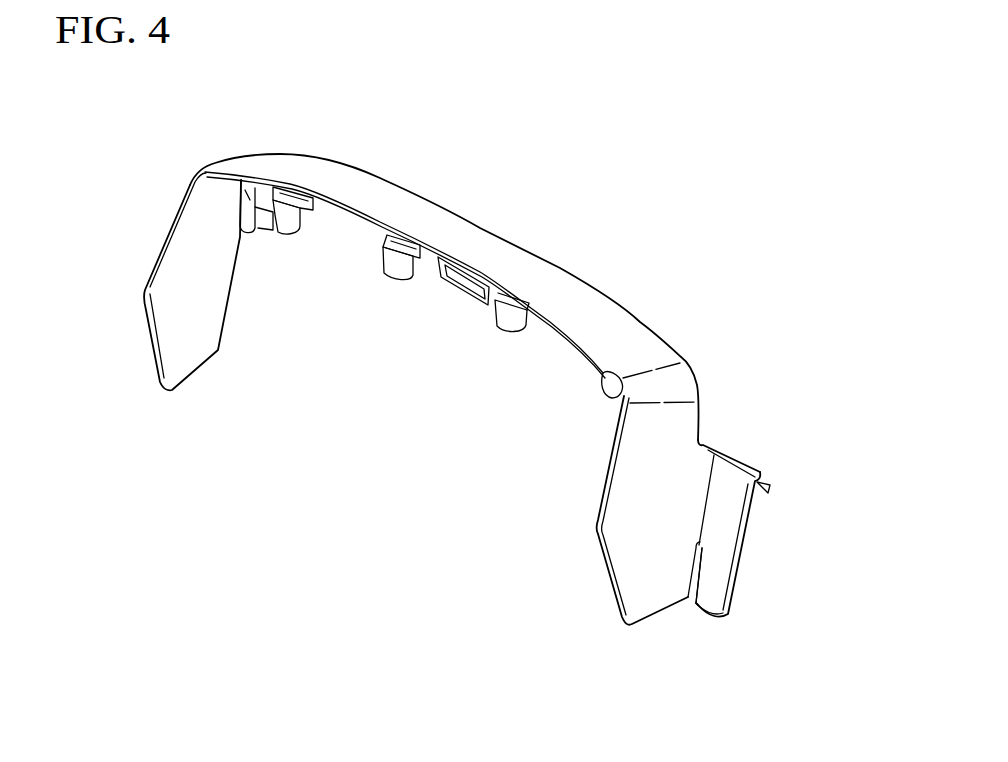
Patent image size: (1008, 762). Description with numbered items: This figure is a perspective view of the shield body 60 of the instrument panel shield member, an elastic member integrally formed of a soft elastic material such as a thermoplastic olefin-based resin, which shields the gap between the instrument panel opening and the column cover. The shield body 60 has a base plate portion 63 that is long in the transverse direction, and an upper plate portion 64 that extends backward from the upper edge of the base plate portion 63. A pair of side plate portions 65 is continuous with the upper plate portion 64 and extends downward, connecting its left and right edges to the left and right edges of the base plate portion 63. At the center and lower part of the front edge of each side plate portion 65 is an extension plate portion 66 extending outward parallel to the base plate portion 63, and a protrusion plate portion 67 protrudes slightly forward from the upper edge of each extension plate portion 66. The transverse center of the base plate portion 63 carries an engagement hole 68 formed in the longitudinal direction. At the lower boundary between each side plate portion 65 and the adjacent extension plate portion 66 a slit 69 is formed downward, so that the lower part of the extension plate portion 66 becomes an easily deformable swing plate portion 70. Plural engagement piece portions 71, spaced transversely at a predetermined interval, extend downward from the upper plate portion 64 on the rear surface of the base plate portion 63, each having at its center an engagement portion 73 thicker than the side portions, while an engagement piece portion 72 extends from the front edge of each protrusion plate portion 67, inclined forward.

The shield body 60 is at (506, 399).
The base plate portion 63 is at (357, 237).
The upper plate portion 64 is at (444, 275).
The side plate portion 65 is at (193, 353).
The extension plate portion 66 is at (725, 505).
The protrusion plate portion 67 is at (747, 452).
The engagement hole 68 is at (470, 290).
The slit 69 is at (697, 577).
The swing plate portion 70 is at (710, 600).
The engagement piece portion 71 is at (282, 222).
The engagement piece portion 72 is at (771, 482).
The engagement portion 73 is at (283, 193).